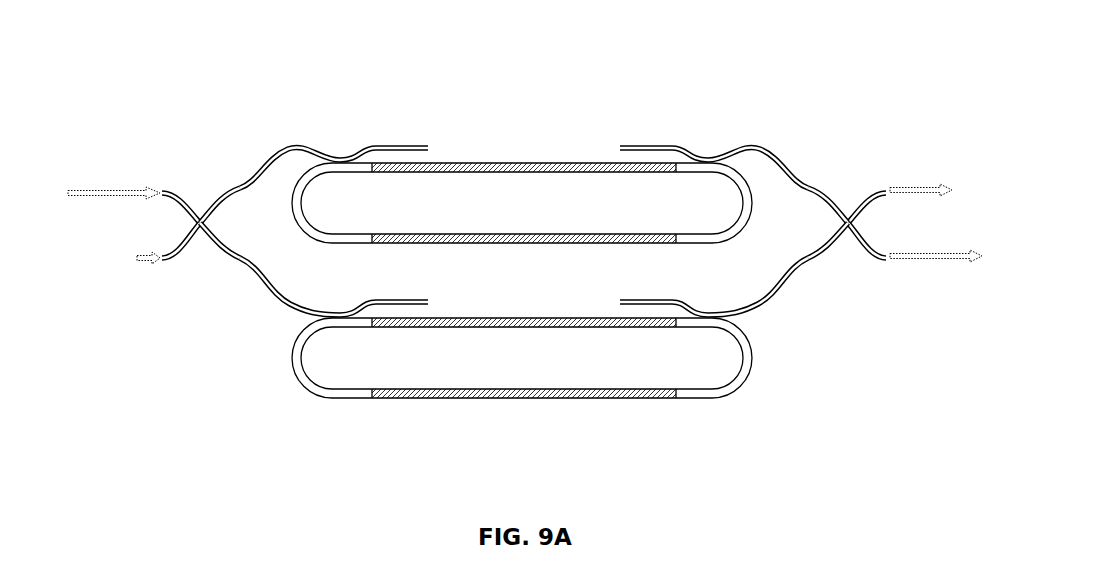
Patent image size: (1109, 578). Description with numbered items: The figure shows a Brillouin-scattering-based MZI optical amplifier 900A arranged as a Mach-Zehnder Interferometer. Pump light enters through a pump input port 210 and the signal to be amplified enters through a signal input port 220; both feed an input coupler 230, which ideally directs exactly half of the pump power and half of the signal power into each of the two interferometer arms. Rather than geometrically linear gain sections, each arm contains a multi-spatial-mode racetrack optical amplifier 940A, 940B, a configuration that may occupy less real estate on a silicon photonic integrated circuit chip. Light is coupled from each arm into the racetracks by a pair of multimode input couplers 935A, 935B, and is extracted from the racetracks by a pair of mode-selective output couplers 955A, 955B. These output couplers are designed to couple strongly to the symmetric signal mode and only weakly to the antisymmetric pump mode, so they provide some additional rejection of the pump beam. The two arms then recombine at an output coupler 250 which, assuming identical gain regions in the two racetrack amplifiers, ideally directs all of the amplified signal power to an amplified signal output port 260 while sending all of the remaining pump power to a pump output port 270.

The MZI optical amplifier 900A is at (561, 36).
The pump input port 210 is at (180, 176).
The signal input port 220 is at (182, 269).
The input coupler 230 is at (203, 208).
The multimode input coupler 935A is at (342, 144).
The multimode input coupler 935B is at (339, 304).
The multi-spatial-mode racetrack optical amplifier 940A is at (509, 151).
The multi-spatial-mode racetrack optical amplifier 940B is at (509, 411).
The mode-selective output coupler 955A is at (709, 144).
The mode-selective output coupler 955B is at (749, 320).
The output coupler 250 is at (843, 208).
The amplified signal output port 260 is at (870, 178).
The pump output port 270 is at (864, 259).